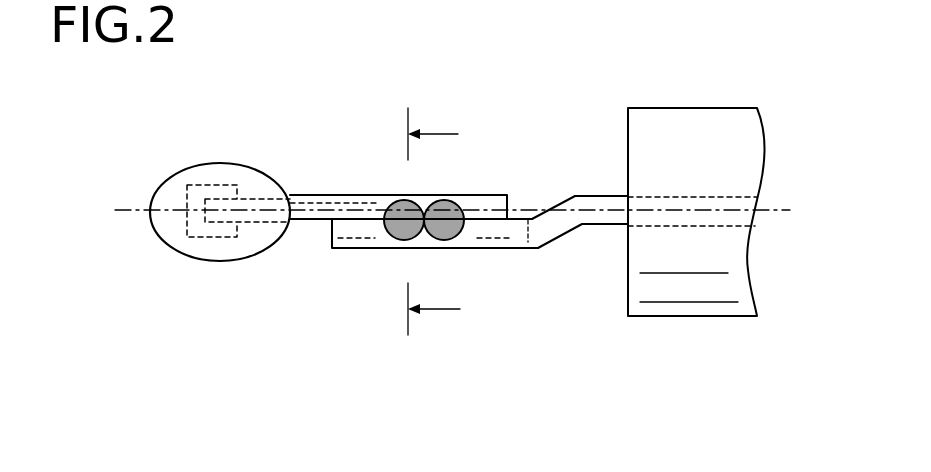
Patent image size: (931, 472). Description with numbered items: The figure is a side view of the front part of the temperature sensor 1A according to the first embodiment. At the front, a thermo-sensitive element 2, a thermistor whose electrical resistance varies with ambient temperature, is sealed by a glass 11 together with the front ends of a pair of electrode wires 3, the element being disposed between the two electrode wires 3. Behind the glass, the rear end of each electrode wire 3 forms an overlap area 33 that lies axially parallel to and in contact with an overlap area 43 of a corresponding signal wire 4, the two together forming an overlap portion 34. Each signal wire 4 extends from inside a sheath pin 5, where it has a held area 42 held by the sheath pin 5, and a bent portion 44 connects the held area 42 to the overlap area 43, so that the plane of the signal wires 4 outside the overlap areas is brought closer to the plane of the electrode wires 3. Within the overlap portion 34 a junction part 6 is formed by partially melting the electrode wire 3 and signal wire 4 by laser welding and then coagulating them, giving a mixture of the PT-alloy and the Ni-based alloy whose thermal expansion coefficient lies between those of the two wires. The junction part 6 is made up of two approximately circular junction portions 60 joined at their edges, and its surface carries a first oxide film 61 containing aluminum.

The temperature sensor 1A is at (277, 357).
The glass 11 is at (220, 175).
The thermo-sensitive element 2 is at (213, 238).
The electrode wire 3 is at (346, 196).
The overlap area 33 is at (421, 196).
The signal wire 4 is at (510, 248).
The overlap portion 34 is at (468, 263).
The overlap area 43 is at (462, 240).
The bent portion 44 is at (552, 220).
The sheath pin 5 is at (672, 148).
The held area 42 is at (693, 226).
The junction part 6 is at (388, 335).
The junction portion 60 is at (444, 240).
The first oxide film 61 is at (403, 228).